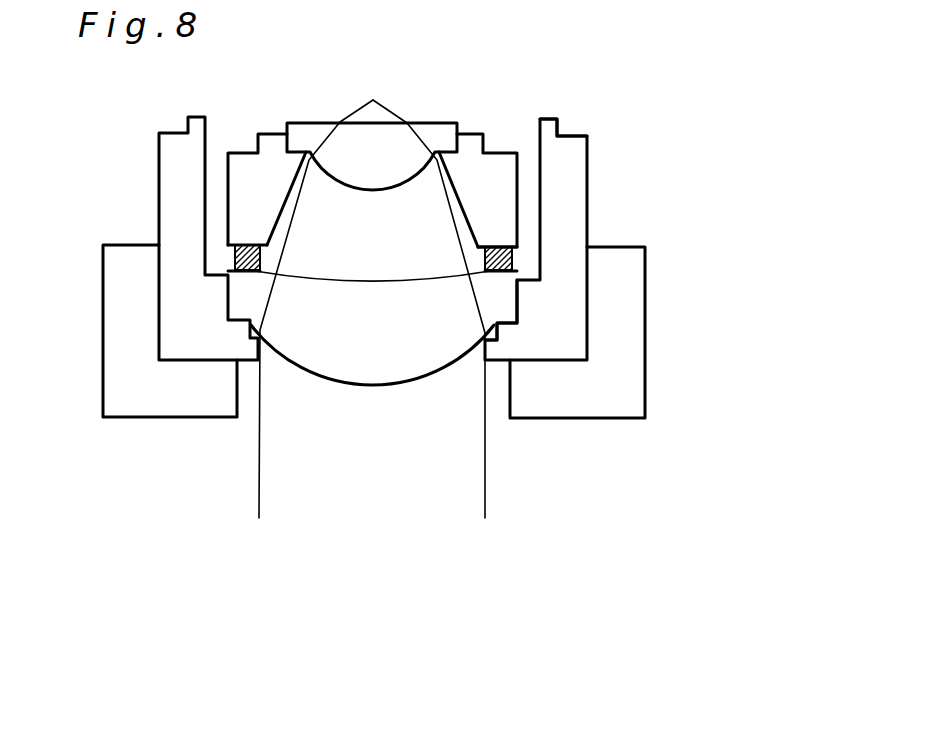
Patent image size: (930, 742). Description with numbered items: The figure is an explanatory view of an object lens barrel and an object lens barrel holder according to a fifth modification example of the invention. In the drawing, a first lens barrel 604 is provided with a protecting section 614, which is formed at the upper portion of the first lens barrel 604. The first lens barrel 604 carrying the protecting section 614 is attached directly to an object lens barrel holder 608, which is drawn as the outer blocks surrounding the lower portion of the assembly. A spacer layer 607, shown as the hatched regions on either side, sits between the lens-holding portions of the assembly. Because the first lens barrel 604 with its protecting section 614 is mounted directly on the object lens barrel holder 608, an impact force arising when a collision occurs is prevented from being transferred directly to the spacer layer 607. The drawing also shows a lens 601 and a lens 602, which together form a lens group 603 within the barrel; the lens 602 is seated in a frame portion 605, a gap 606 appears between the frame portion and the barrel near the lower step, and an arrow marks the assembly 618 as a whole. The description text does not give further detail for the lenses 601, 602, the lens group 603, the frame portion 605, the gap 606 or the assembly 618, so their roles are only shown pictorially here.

The first lens 601 is at (343, 365).
The second lens 602 is at (382, 173).
The objective lens unit 603 is at (473, 497).
The first lens barrel 604 is at (575, 193).
The lens frame 605 is at (488, 158).
The gap 606 is at (490, 348).
The spacer layer 607 is at (512, 260).
The object lens barrel holder 608 is at (620, 348).
The protecting section 614 is at (555, 123).
The optical head 618 is at (529, 489).